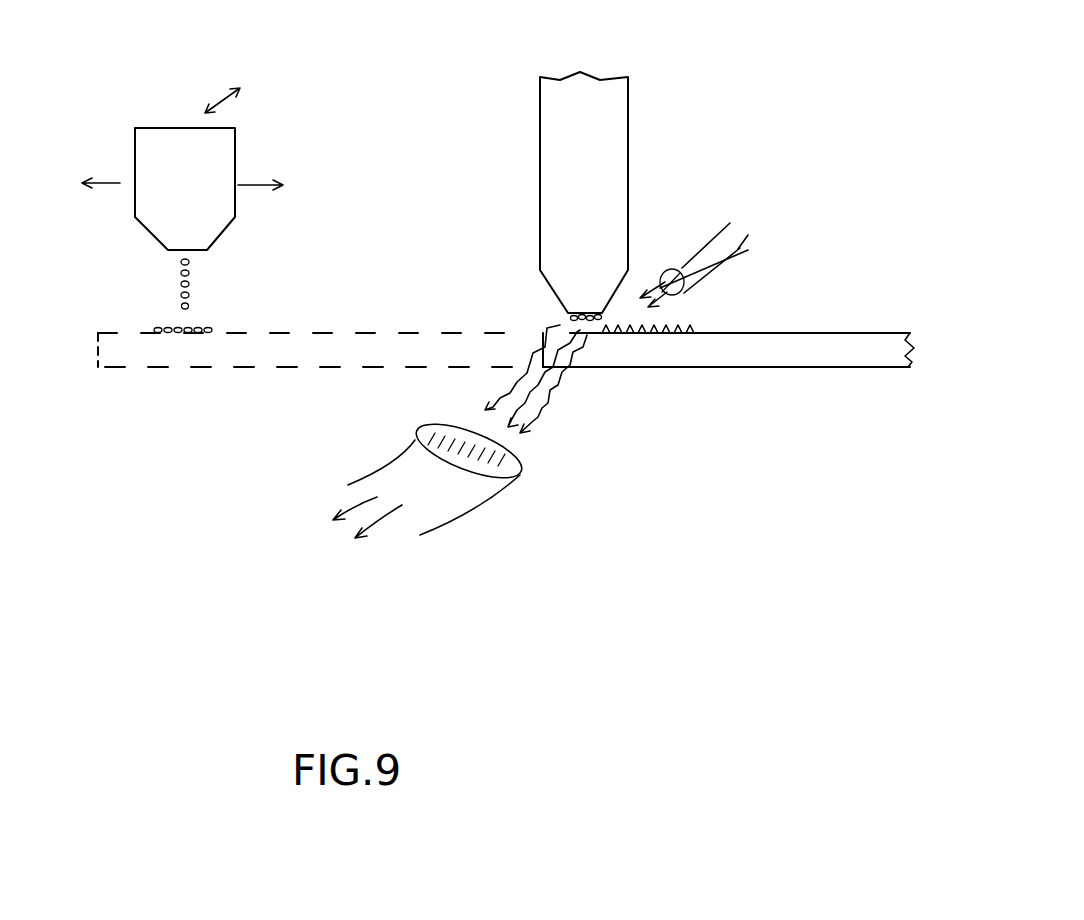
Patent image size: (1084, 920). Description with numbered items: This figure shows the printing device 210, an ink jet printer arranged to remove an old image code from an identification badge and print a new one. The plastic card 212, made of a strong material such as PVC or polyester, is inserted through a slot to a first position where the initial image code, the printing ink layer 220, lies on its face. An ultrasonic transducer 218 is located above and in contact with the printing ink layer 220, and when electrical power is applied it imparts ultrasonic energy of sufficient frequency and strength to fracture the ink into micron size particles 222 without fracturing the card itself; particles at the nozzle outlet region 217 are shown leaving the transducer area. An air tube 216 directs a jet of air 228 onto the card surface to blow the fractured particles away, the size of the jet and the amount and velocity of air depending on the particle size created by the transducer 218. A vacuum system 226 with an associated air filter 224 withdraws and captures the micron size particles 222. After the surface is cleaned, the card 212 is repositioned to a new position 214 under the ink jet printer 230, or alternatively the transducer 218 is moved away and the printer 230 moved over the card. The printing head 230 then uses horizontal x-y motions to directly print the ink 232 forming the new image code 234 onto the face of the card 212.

The printing device 210 is at (442, 20).
The plastic card 212 is at (815, 352).
The new position 214 is at (143, 352).
The air tube 216 is at (733, 235).
The dispensed particles at nozzle outlet 217 is at (565, 317).
The ultrasonic transducer 218 is at (605, 145).
The printing ink layer 220 is at (685, 332).
The micron size particles 222 is at (549, 379).
The air filter 224 is at (505, 465).
The vacuum system 226 is at (390, 532).
The jet of air 228 is at (748, 250).
The ink jet printer 230 is at (225, 160).
The ink 232 is at (193, 281).
The new image code 234 is at (207, 327).